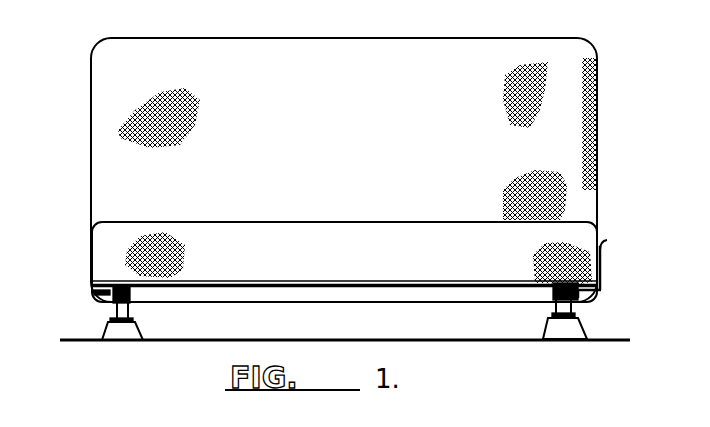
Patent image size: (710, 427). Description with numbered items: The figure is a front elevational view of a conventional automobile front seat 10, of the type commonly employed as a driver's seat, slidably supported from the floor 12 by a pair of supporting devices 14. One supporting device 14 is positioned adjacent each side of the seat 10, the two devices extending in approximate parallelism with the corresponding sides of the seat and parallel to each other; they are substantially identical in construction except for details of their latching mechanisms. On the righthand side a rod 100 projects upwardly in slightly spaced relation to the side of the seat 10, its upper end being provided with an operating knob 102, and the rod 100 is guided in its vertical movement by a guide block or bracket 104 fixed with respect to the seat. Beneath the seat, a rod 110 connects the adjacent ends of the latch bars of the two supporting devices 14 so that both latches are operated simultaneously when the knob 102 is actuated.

The seat 10 is at (352, 147).
The rod 110 is at (346, 290).
The supporting devices 14 is at (137, 311).
The floor 12 is at (492, 341).
The rod 100 is at (603, 256).
The operating knob 102 is at (603, 243).
The guide block or bracket 104 is at (590, 290).